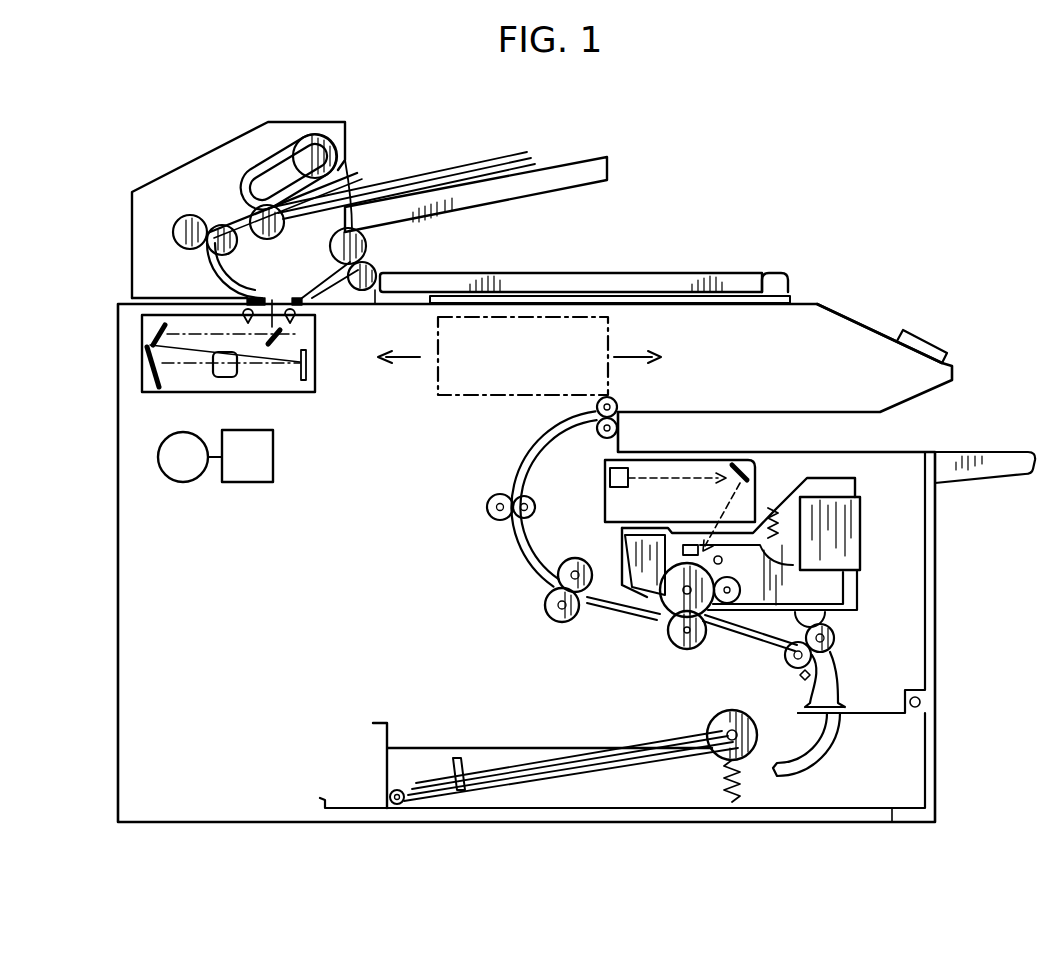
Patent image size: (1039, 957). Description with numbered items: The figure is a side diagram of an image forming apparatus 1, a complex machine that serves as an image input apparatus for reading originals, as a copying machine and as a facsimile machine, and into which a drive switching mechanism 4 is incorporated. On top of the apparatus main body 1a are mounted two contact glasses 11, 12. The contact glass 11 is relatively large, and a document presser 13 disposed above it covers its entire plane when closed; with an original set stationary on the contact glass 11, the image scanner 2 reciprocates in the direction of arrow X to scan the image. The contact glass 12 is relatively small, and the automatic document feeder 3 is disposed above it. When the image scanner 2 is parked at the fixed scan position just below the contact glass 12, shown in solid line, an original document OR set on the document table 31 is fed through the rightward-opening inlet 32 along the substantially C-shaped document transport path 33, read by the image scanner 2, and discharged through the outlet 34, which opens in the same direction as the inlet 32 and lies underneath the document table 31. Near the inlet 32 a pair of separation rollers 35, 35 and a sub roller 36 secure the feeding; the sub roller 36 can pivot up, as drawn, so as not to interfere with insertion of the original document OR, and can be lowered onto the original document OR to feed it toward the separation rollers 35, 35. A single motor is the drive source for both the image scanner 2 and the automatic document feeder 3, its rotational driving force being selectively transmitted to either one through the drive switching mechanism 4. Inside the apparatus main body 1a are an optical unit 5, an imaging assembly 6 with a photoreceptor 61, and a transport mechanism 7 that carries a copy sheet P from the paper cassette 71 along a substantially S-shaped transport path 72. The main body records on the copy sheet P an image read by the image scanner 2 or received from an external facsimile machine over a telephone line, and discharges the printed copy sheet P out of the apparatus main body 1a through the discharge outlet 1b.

The image forming apparatus 1 is at (910, 116).
The image forming apparatus main body 1a is at (855, 320).
The discharge outlet 1b is at (664, 436).
The image scanner 2 is at (289, 395).
The automatic document feeder 3 is at (138, 95).
The drive switching mechanism 4 is at (257, 484).
The optical unit 5 is at (770, 488).
The imaging assembly 6 is at (875, 560).
The transport mechanism 7 is at (526, 597).
The contact glass 11 is at (775, 272).
The contact glass 12 is at (205, 270).
The document presser 13 is at (672, 277).
The document table 31 is at (572, 160).
The inlet 32 is at (308, 190).
The document transport path 33 is at (218, 223).
The outlet 34 is at (377, 255).
The separation rollers 35 is at (255, 180).
The sub roller 36 is at (316, 143).
The photoreceptor 61 is at (680, 622).
The paper cassette 71 is at (462, 758).
The transport path 72 is at (516, 541).
The original document OR is at (478, 160).
The copy sheet P is at (566, 760).
The direction of arrow X is at (531, 358).